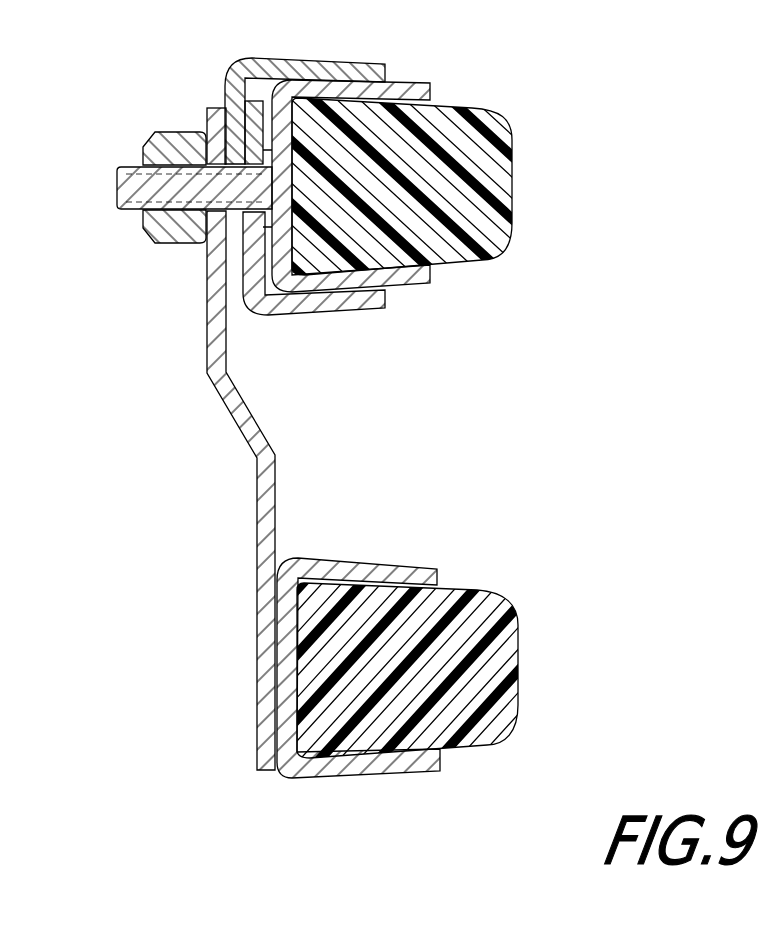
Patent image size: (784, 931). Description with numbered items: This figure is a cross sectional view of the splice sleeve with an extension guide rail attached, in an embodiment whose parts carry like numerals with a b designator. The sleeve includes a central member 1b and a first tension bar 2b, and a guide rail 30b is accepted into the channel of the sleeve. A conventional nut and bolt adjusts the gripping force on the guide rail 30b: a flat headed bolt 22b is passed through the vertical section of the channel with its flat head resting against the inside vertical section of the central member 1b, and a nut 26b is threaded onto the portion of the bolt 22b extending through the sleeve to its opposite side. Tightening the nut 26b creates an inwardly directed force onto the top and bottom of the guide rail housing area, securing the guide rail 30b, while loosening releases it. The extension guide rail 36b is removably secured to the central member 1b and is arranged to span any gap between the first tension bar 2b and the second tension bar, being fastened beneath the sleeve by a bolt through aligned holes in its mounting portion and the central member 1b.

The central member 1b is at (323, 313).
The first tension bar 2b is at (282, 58).
The flat headed bolt 22b is at (123, 211).
The nut 26b is at (172, 131).
The guide rail 30b is at (490, 110).
The extension guide rail 36b is at (231, 418).